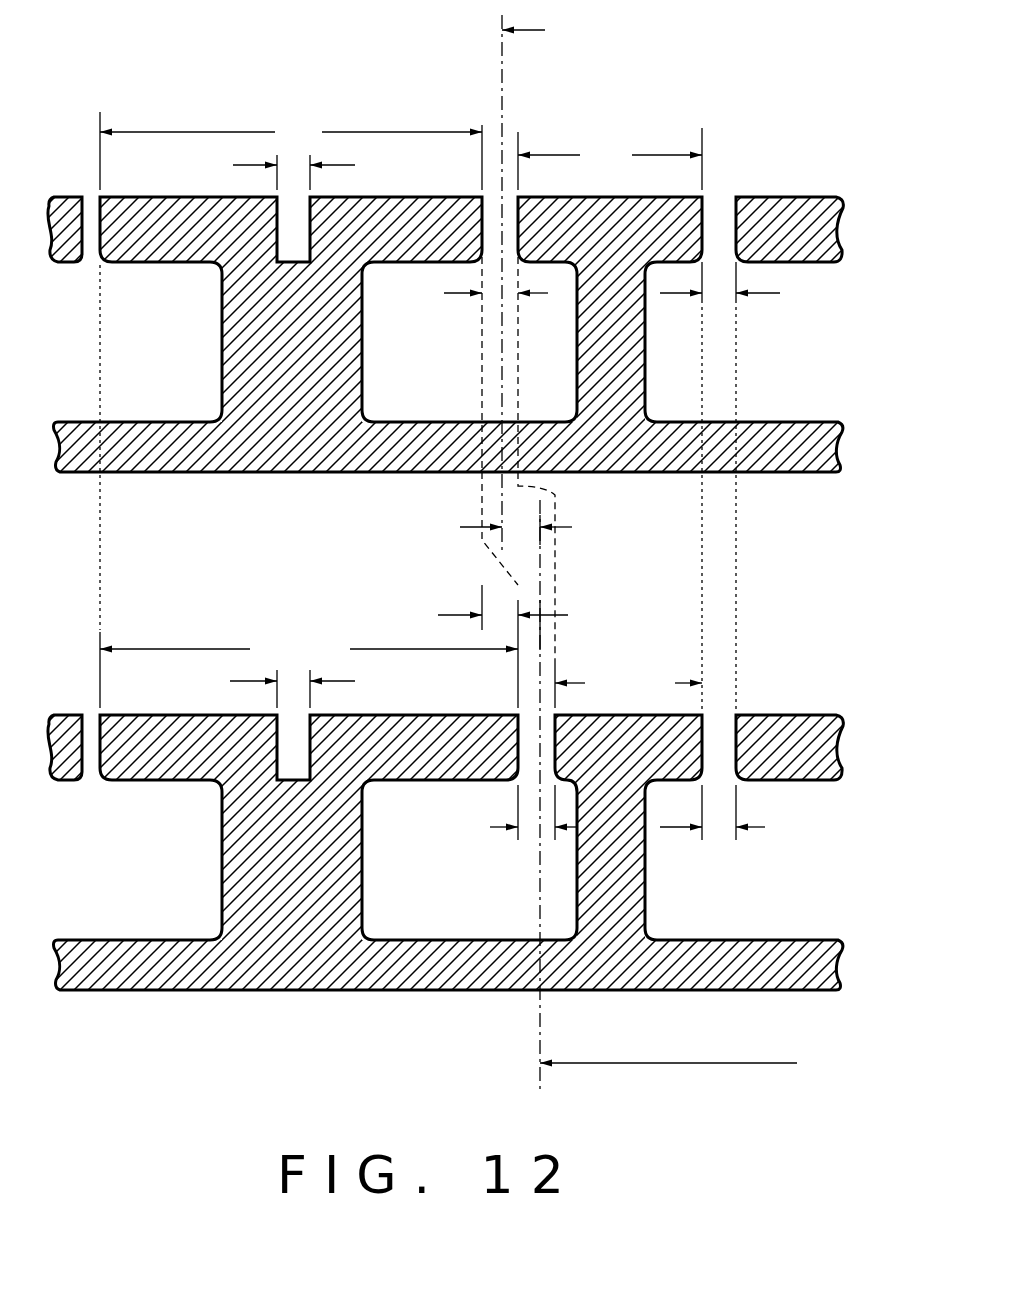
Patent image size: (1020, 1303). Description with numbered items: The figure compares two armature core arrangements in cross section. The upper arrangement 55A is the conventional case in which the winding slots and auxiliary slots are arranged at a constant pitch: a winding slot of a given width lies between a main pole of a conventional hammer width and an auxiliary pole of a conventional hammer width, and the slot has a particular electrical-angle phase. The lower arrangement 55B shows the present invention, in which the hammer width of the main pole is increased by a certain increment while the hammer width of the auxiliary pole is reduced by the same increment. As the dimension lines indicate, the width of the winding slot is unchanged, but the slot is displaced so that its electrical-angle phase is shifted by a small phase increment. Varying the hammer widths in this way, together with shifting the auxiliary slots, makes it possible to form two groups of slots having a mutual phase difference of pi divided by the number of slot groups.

In FIG. 12A, the lamination stack with equal-width teeth 55A is at (297, 95).
In FIG. 12B, the lamination stack with modified tooth widths 55B is at (315, 1015).